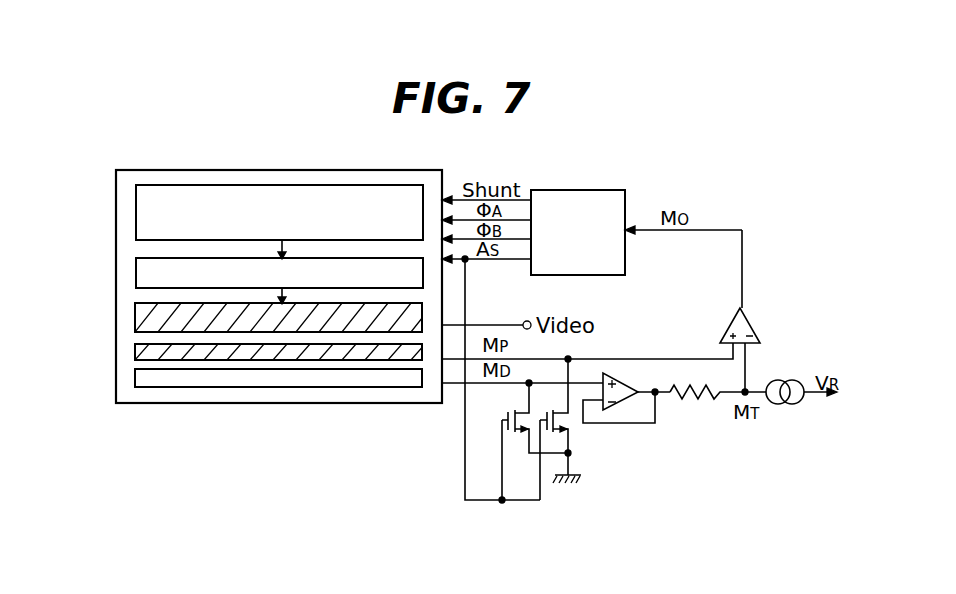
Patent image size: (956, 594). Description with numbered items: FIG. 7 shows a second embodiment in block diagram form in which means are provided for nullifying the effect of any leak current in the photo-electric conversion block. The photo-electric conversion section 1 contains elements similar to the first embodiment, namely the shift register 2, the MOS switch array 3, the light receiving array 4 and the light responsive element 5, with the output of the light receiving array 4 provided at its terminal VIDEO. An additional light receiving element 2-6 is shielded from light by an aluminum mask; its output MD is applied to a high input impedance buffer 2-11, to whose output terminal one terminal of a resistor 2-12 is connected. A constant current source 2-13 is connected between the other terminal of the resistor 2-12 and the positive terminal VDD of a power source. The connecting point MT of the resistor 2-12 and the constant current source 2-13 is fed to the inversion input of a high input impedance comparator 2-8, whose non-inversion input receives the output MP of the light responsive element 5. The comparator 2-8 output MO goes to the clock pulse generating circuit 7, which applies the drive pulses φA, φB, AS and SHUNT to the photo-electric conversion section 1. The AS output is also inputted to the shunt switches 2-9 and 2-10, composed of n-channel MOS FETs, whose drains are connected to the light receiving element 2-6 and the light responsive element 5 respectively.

The photo-electric conversion section 1 is at (215, 170).
The shift register 2 is at (136, 210).
The MOS switch array 3 is at (136, 272).
The light receiving array 4 is at (135, 316).
The light responsive element 5 is at (135, 352).
The additional light receiving element 2-6 is at (135, 378).
The clock pulse generating circuit 7 is at (601, 190).
The high input impedance comparator 2-8 is at (752, 322).
The shunt switch 2-9 is at (515, 436).
The shunt switch 2-10 is at (556, 434).
The high input impedance buffer 2-11 is at (614, 405).
The resistor 2-12 is at (698, 403).
The constant current source 2-13 is at (788, 404).